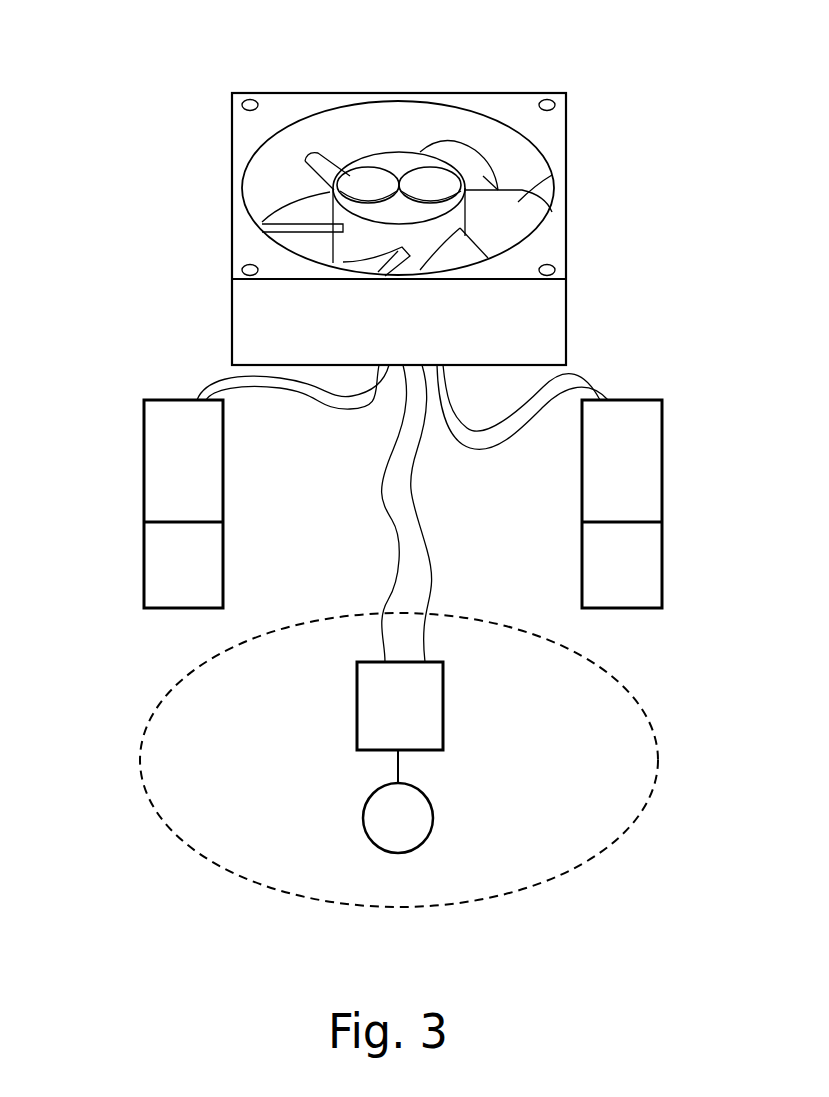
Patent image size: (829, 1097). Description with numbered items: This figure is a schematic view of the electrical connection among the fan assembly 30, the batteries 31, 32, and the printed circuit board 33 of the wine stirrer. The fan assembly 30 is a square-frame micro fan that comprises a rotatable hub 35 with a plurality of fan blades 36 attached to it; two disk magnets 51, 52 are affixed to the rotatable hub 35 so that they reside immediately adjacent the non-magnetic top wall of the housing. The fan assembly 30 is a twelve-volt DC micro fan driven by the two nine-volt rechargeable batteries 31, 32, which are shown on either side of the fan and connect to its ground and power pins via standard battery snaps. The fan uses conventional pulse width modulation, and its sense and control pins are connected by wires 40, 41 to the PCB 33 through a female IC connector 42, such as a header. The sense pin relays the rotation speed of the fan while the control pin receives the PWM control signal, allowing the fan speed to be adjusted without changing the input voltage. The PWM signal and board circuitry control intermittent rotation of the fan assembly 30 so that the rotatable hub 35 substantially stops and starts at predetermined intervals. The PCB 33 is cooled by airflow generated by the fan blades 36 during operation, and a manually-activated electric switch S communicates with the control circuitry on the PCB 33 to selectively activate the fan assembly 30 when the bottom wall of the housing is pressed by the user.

The fan assembly 30 is at (197, 112).
The battery 31 is at (163, 475).
The battery 32 is at (640, 465).
The printed circuit board 33 is at (617, 717).
The rotatable hub 35 is at (408, 213).
The fan blades 36 is at (485, 176).
The wire 40 is at (385, 515).
The wire 41 is at (420, 540).
The female IC connector 42 is at (400, 757).
The disk magnet 51 is at (368, 178).
The disk magnet 52 is at (420, 177).